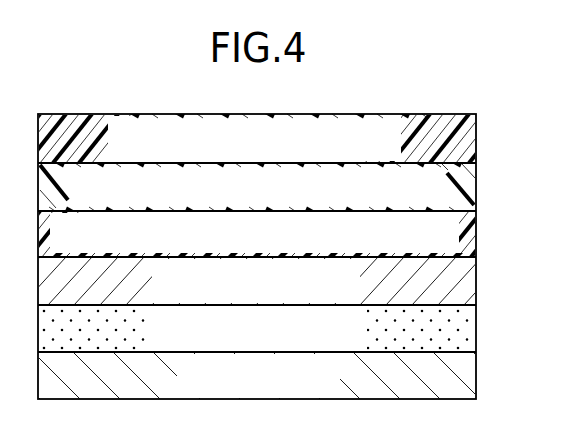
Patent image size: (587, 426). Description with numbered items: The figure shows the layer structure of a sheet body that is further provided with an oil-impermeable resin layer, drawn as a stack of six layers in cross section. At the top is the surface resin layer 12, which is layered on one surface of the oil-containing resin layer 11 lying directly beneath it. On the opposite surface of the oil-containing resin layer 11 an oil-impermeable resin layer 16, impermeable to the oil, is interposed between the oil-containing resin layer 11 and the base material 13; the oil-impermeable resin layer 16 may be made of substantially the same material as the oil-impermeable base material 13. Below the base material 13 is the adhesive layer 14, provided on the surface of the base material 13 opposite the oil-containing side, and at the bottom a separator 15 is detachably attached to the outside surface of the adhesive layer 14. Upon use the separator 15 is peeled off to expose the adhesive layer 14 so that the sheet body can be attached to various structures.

The surface resin layer 12 is at (478, 137).
The oil-containing resin layer 11 is at (478, 187).
The oil-impermeable resin layer 16 is at (478, 233).
The base material 13 is at (478, 283).
The adhesive layer 14 is at (478, 332).
The separator 15 is at (478, 382).